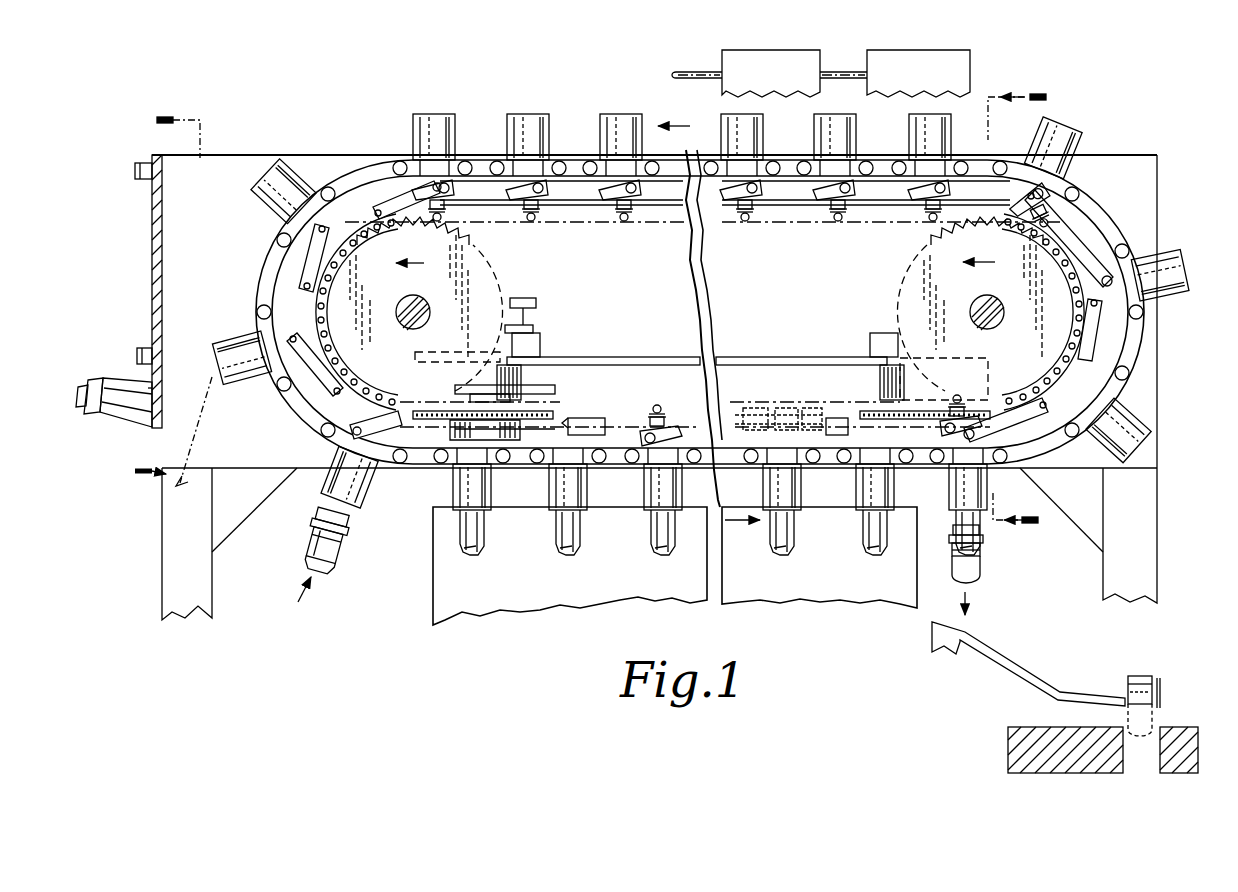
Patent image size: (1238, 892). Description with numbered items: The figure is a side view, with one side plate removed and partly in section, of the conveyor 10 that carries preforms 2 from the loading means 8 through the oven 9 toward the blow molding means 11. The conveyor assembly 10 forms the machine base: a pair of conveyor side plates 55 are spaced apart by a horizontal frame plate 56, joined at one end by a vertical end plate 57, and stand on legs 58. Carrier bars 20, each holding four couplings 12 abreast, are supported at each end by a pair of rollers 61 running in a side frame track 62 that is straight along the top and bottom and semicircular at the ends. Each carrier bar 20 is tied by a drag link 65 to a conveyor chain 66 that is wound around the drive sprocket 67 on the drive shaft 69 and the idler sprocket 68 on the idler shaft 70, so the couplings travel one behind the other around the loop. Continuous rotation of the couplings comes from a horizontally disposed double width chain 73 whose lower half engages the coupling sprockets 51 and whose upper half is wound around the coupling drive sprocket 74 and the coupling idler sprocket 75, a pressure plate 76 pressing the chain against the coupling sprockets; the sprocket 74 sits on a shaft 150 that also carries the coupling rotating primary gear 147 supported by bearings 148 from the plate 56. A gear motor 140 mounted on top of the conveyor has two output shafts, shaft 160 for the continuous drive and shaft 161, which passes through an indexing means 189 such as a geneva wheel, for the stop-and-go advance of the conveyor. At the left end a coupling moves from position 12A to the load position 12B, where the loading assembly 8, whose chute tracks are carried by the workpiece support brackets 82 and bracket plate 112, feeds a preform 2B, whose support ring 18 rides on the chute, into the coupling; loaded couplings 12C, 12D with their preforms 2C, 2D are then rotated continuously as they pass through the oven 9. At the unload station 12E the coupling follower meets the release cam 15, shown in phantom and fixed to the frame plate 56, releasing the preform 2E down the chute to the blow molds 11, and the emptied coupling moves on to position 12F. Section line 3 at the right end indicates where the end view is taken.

The conveyor 10 is at (146, 242).
The conveyor side plates 55 is at (242, 158).
The vertical end plate 57 is at (152, 288).
The legs 58 is at (162, 550).
The side frame track 62 is at (268, 256).
The carrier bar 20 is at (500, 160).
The rollers 61 is at (470, 176).
The coupling 12 is at (290, 184).
The coupling position 12A is at (240, 372).
The coupling in load position 12B is at (322, 478).
The loaded coupling 12C is at (494, 506).
The loaded coupling 12D is at (862, 508).
The coupling at unload station 12E is at (988, 478).
The coupling position after release 12F is at (1146, 426).
The preform 2 is at (784, 561).
The preform being loaded 2B is at (338, 566).
The workpiece pin 2C is at (478, 556).
The workpiece pin 2D is at (882, 556).
The released preform 2E is at (976, 570).
The support ring 18 is at (344, 545).
The idler shaft 70 is at (408, 298).
The left sprocket wheel 68 is at (486, 328).
The drive shaft 69 is at (980, 298).
The drive sprocket 67 is at (978, 341).
The conveyor chain 66 is at (388, 403).
The drag link 65 is at (308, 296).
The coupling sprockets 51 is at (648, 428).
The horizontal frame plate 56 is at (650, 357).
The bearings 148 is at (500, 370).
The coupling rotating primary gear 147 is at (520, 298).
The shaft 150 is at (455, 402).
The coupling drive sprocket 74 is at (535, 411).
The pressure plate 76 is at (592, 418).
The double width chain 73 is at (782, 408).
The coupling idler sprocket 75 is at (884, 411).
The release cam 15 is at (988, 360).
The gear motor 140 is at (771, 73).
The indexing means 189 is at (918, 73).
The output shaft 160 is at (684, 72).
The output shaft 161 is at (843, 72).
The section line 3 is at (1017, 312).
The oven 9 is at (700, 600).
The blow molding means 11 is at (1003, 724).
The workpiece support brackets 82 is at (126, 402).
The bracket plate 112 is at (100, 418).
The loading means 8 is at (118, 382).